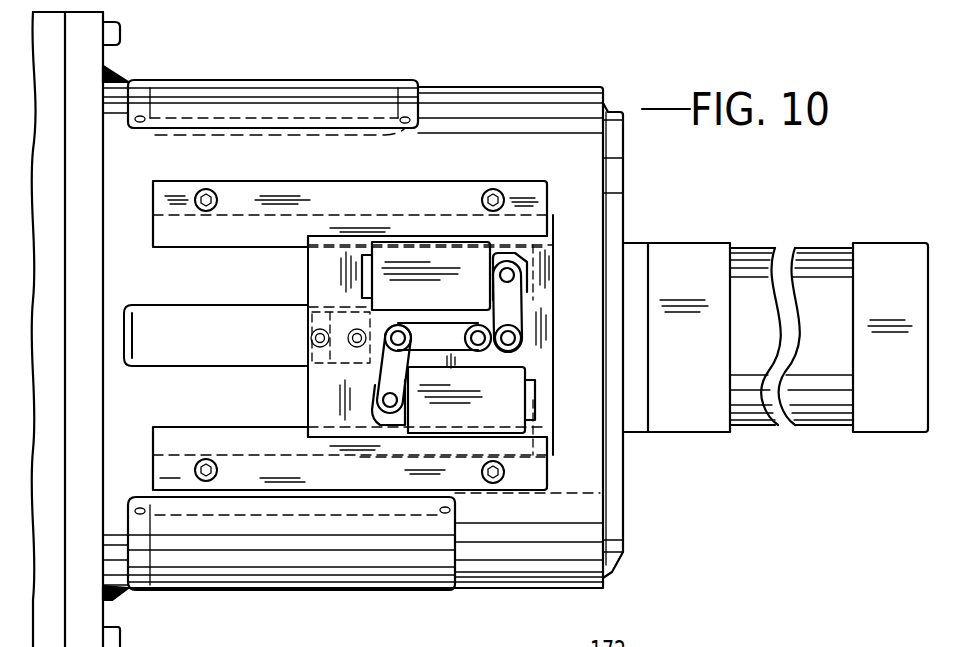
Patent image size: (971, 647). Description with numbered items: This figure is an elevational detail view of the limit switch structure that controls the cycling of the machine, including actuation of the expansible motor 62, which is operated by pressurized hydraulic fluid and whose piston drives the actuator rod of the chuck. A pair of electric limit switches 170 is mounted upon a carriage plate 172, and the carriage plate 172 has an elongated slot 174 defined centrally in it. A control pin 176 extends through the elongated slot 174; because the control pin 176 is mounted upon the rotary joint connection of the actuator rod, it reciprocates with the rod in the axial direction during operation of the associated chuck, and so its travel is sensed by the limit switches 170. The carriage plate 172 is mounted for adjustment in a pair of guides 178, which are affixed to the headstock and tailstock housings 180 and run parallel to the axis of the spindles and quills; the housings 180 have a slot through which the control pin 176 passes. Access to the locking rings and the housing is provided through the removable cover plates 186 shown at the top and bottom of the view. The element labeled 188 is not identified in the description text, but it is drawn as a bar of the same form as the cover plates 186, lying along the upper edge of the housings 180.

The expansible motor 62 is at (828, 425).
The electric limit switches 170 is at (436, 255).
The carriage plate 172 is at (535, 357).
The elongated slot 174 is at (440, 350).
The control pin 176 is at (477, 338).
The guides 178 is at (470, 195).
The housings 180 is at (580, 587).
The removable cover plates 186 is at (283, 560).
The upper guide bar 188 is at (282, 82).